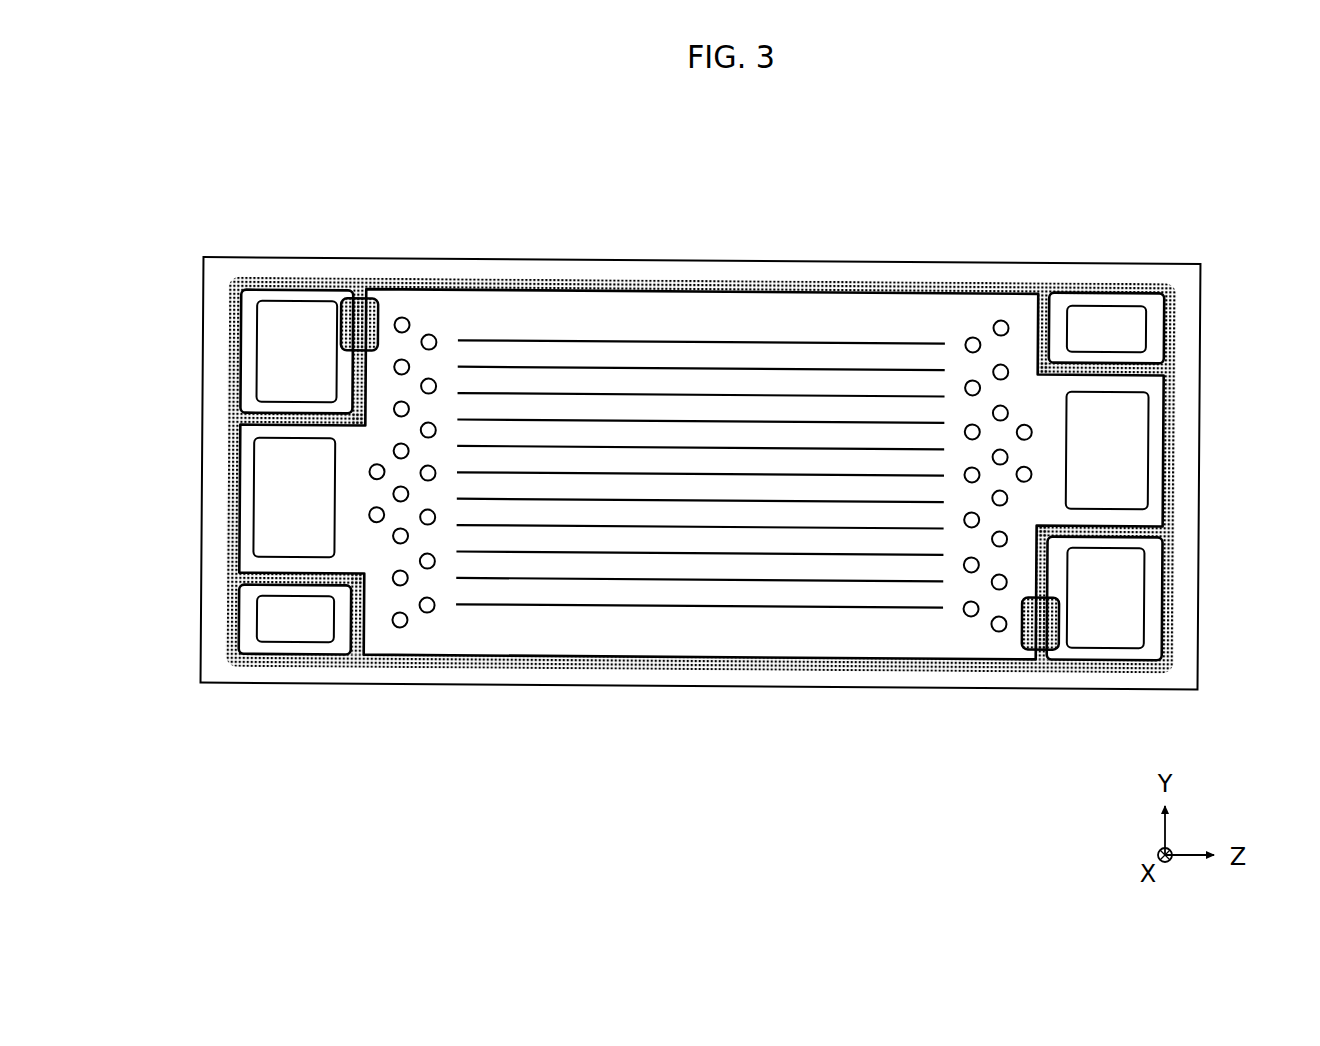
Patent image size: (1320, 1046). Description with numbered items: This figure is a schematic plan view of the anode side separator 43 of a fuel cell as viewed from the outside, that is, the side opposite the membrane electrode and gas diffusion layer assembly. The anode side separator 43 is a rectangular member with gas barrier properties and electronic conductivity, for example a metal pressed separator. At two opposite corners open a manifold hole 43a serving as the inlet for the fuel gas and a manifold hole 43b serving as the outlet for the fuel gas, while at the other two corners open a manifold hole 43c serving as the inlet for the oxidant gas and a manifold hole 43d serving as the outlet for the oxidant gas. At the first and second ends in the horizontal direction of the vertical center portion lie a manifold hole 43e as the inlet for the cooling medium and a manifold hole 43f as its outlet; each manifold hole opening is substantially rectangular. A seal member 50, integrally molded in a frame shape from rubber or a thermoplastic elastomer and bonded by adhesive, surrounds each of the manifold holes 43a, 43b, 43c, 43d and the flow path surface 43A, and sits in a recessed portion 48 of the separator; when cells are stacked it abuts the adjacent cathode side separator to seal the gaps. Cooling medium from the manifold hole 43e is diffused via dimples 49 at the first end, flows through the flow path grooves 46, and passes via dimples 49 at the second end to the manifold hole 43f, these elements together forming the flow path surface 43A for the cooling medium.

The anode side separator 43 is at (1120, 177).
The flow path surface 43A is at (717, 325).
The manifold hole 43a is at (1113, 307).
The manifold hole 43b is at (257, 628).
The manifold hole 43c is at (1150, 615).
The manifold hole 43d is at (307, 303).
The manifold hole 43e is at (257, 506).
The manifold hole 43f is at (1150, 452).
The flow path grooves 46 is at (599, 410).
The recessed portion 48 is at (979, 283).
The dimples 49 is at (401, 622).
The seal member 50 is at (918, 281).